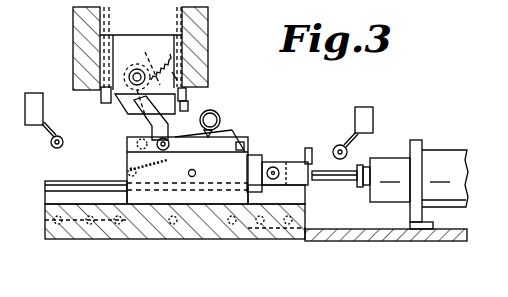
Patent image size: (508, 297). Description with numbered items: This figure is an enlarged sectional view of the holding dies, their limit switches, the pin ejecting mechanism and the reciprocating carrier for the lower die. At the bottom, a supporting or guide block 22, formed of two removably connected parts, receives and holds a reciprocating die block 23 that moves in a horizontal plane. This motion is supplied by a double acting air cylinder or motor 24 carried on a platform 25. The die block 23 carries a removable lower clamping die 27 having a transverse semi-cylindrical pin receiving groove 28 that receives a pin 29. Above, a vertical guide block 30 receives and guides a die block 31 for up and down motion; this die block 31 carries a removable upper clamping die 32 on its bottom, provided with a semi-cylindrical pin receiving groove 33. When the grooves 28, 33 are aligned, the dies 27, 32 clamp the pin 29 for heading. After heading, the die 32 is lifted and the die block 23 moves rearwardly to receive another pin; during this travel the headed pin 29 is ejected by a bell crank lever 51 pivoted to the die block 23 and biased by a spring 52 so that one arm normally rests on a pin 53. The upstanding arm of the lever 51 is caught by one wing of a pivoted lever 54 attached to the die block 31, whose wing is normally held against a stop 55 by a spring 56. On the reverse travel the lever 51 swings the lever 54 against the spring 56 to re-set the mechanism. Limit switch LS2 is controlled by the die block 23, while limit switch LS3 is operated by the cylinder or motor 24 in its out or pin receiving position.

The vertical guide block 30 is at (188, 22).
The die block 31 is at (107, 95).
The upper clamping die 32 is at (127, 112).
The pin receiving groove 33 is at (160, 113).
The bell crank lever 51 is at (143, 123).
The spring 52 is at (128, 163).
The pin 53 is at (196, 173).
The pivoted lever 54 is at (158, 59).
The stop 55 is at (138, 60).
The spring 56 is at (173, 84).
The pin 29 is at (212, 110).
The pin receiving groove 28 is at (212, 118).
The lower clamping die 27 is at (230, 134).
The air cylinder or motor 24 is at (437, 160).
The die block 23 is at (158, 197).
The guide block 22 is at (210, 232).
The platform 25 is at (393, 237).
The limit switch LS2 is at (43, 111).
The limit switch LS3 is at (356, 121).